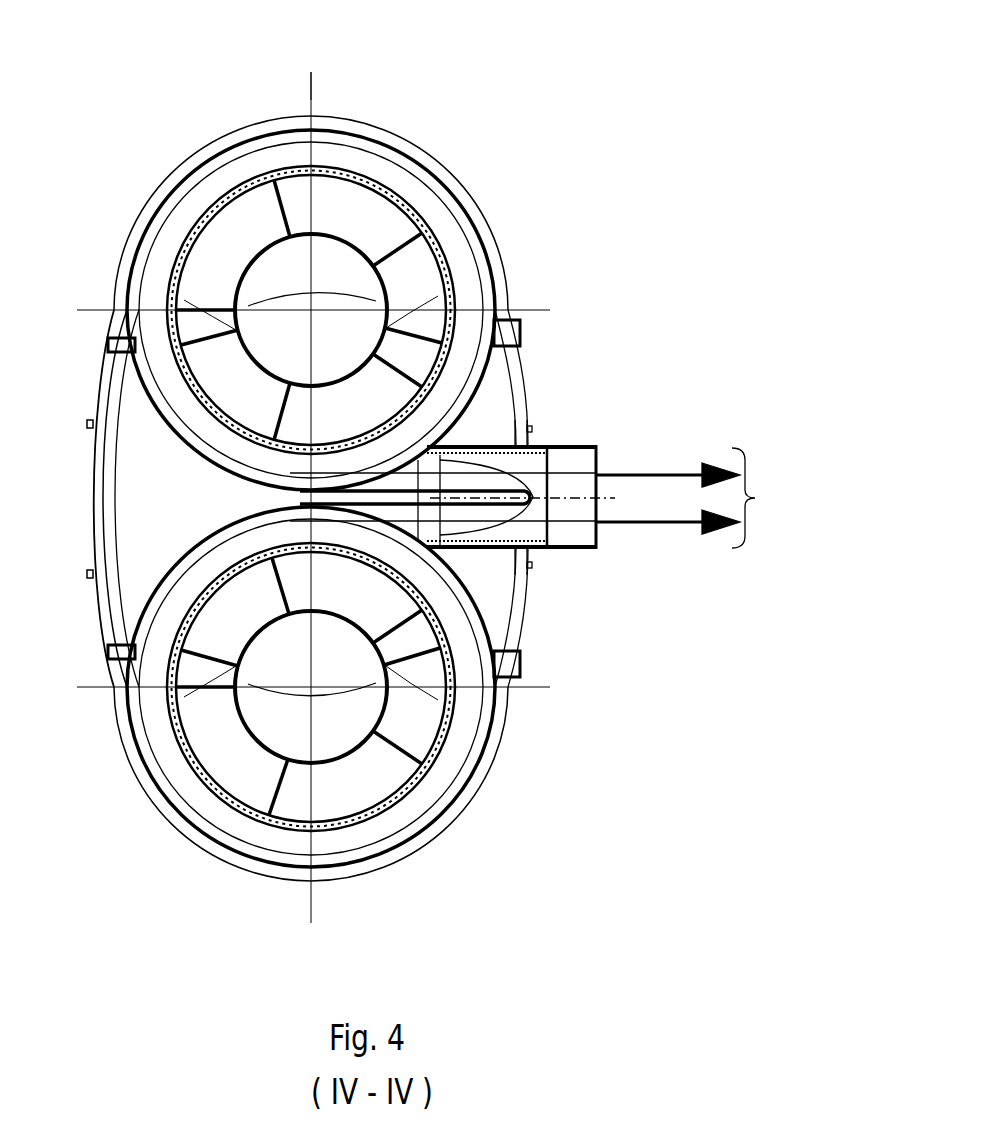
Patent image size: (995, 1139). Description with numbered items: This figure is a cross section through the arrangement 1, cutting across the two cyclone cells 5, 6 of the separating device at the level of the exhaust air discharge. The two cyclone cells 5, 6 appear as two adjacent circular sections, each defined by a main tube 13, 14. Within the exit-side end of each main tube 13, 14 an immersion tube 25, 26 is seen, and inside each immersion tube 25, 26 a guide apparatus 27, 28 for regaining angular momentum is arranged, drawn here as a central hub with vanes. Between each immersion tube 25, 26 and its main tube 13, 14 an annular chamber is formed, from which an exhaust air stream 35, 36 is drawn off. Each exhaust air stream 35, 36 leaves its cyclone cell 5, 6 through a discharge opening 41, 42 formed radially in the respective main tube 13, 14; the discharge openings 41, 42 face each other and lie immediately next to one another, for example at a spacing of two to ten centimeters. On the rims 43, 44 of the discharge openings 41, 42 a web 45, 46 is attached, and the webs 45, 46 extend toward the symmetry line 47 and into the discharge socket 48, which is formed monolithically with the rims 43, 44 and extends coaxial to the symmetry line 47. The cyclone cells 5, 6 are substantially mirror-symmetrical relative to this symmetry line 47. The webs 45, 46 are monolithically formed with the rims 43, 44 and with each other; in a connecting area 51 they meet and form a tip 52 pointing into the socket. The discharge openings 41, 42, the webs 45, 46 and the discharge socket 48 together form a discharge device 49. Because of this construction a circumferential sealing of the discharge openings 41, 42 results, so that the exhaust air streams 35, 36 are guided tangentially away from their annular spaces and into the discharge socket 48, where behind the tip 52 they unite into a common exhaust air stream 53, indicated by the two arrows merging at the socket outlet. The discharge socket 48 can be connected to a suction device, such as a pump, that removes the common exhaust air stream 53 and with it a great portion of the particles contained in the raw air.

The arrangement 1 is at (560, 192).
The cyclone cell 5 is at (310, 740).
The cyclone cell 6 is at (312, 255).
The main tube 13 is at (200, 832).
The main tube 14 is at (207, 153).
The immersion tube 25 is at (347, 167).
The immersion tube 26 is at (347, 830).
The guide apparatus 27 is at (277, 718).
The guide apparatus 28 is at (280, 270).
The exhaust air stream 35 is at (678, 470).
The exhaust air stream 36 is at (677, 527).
The discharge opening 41 is at (395, 535).
The discharge opening 42 is at (388, 467).
The rim 43 is at (210, 530).
The rim 44 is at (210, 470).
The web 45 is at (338, 545).
The web 46 is at (332, 490).
The symmetry line 47 is at (602, 446).
The discharge socket 48 is at (572, 446).
The discharge device 49 is at (490, 420).
The connecting area 51 is at (530, 557).
The tip 52 is at (580, 552).
The common exhaust air stream 53 is at (757, 498).